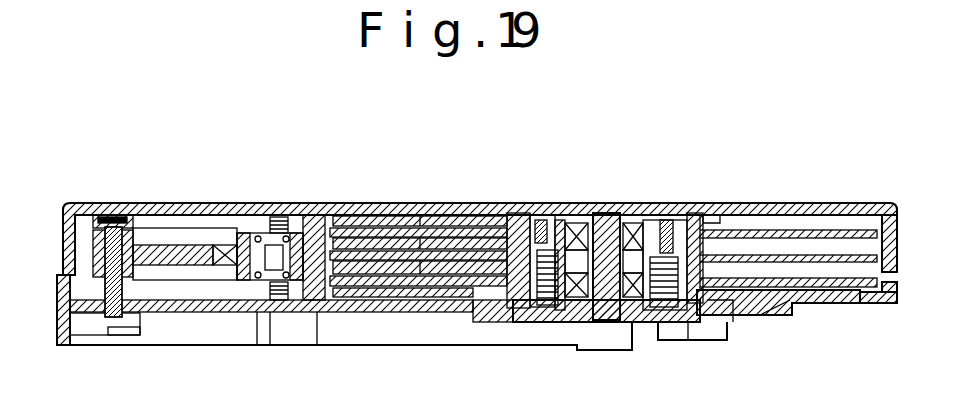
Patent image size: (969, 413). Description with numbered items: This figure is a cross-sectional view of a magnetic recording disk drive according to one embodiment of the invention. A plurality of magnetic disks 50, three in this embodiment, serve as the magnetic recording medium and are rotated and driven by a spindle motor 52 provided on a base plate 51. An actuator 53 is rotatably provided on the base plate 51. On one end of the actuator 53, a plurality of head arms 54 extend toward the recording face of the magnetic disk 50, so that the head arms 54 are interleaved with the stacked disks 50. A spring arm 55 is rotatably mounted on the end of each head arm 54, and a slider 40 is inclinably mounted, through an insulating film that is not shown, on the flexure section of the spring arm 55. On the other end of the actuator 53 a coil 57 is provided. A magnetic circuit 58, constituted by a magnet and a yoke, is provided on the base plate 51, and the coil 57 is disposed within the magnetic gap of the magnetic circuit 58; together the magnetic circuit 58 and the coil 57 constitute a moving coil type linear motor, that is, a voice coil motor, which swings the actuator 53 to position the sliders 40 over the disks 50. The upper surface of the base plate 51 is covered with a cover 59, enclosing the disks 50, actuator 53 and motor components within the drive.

The slider 40 is at (497, 227).
The magnetic disk 50 is at (813, 228).
The base plate 51 is at (390, 308).
The spindle motor 52 is at (717, 215).
The actuator 53 is at (352, 320).
The head arm 54 is at (403, 243).
The spring arm 55 is at (467, 223).
The coil 57 is at (167, 250).
The magnetic circuit 58 is at (147, 185).
The cover 59 is at (305, 215).